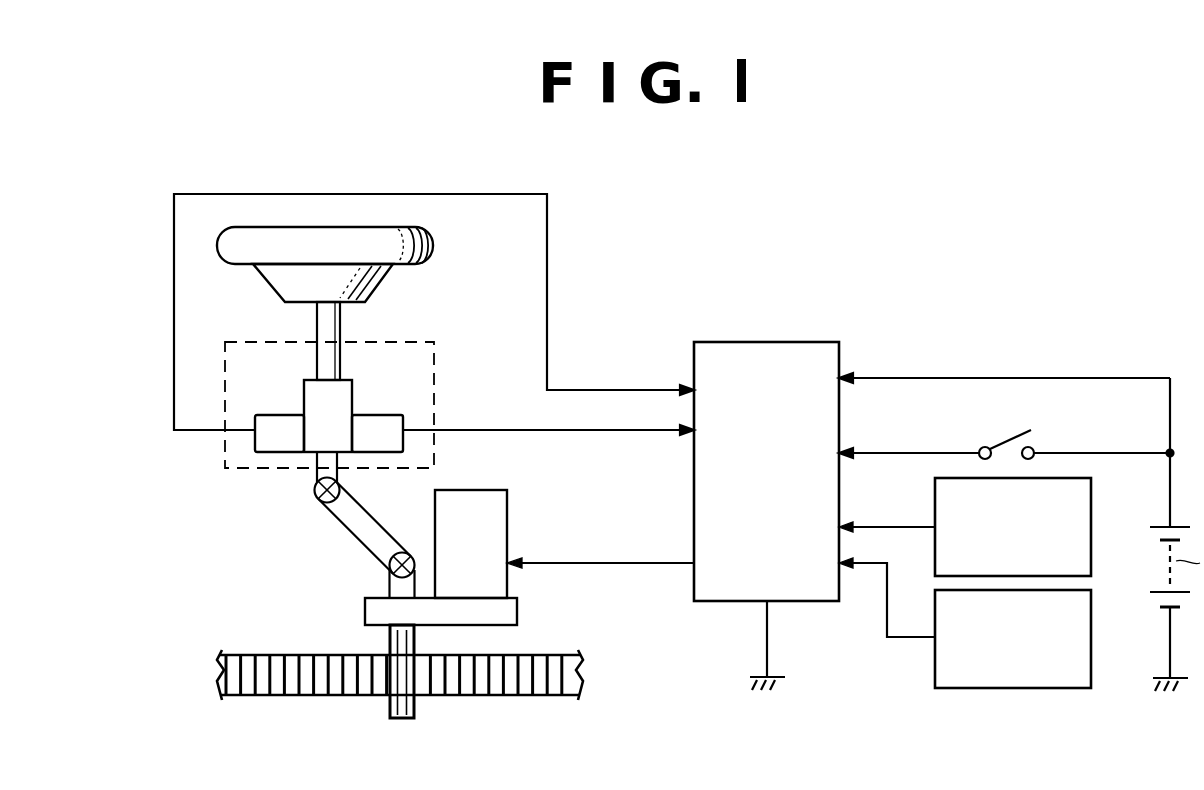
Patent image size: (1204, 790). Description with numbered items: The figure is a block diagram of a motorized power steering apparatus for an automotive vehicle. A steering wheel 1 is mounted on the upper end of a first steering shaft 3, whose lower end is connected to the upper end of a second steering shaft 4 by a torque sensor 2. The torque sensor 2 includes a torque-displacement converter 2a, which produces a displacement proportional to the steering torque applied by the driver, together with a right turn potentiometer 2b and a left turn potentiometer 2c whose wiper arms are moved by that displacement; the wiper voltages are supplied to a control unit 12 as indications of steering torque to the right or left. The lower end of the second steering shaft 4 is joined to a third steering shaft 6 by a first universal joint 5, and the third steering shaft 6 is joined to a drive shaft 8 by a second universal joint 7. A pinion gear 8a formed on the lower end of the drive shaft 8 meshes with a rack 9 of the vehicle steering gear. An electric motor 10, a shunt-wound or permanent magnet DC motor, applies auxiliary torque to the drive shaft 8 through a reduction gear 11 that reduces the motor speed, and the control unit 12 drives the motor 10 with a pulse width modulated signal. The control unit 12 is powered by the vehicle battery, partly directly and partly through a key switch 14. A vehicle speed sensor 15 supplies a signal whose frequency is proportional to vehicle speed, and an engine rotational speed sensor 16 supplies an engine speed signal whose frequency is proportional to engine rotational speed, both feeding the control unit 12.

The steering wheel 1 is at (437, 240).
The torque sensor 2 is at (247, 342).
The torque-displacement converter 2a is at (342, 405).
The right turn potentiometer 2b is at (390, 420).
The left turn potentiometer 2c is at (254, 448).
The first steering shaft 3 is at (341, 322).
The second steering shaft 4 is at (318, 472).
The first universal joint 5 is at (320, 498).
The third steering shaft 6 is at (362, 531).
The second universal joint 7 is at (388, 568).
The drive shaft 8 is at (414, 632).
The pinion gear 8a is at (388, 703).
The rack 9 is at (458, 696).
The electric motor 10 is at (495, 516).
The reduction gear 11 is at (520, 610).
The control unit 12 is at (778, 342).
The key switch 14 is at (1006, 441).
The vehicle speed sensor 15 is at (1092, 520).
The engine rotational speed sensor 16 is at (985, 690).